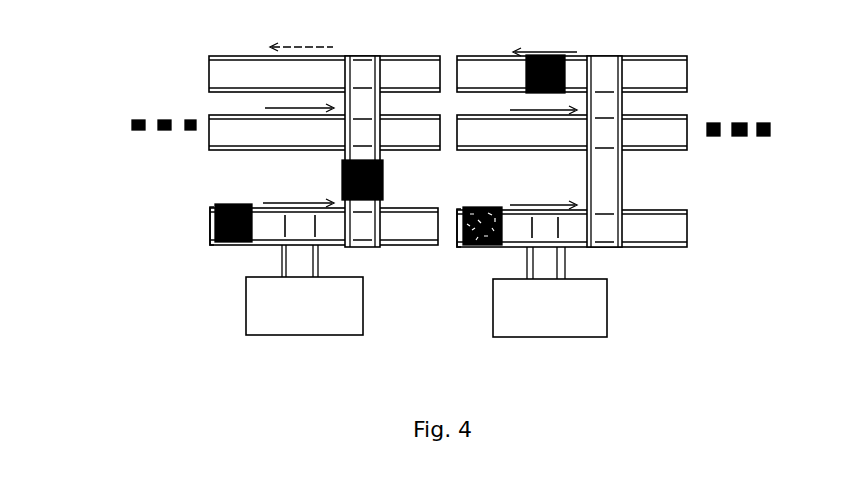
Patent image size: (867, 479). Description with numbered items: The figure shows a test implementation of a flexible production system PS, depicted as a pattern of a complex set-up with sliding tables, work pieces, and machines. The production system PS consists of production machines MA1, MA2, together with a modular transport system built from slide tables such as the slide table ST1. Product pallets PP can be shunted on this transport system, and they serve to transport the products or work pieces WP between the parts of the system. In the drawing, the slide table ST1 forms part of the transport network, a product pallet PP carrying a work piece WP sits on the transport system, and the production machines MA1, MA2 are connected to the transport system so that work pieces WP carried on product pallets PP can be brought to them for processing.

The flexible production system PS is at (403, 96).
The slide table ST1 is at (448, 151).
The work piece WP is at (213, 212).
The product pallet PP is at (206, 238).
The production machine MA1 is at (304, 290).
The production machine MA2 is at (550, 292).